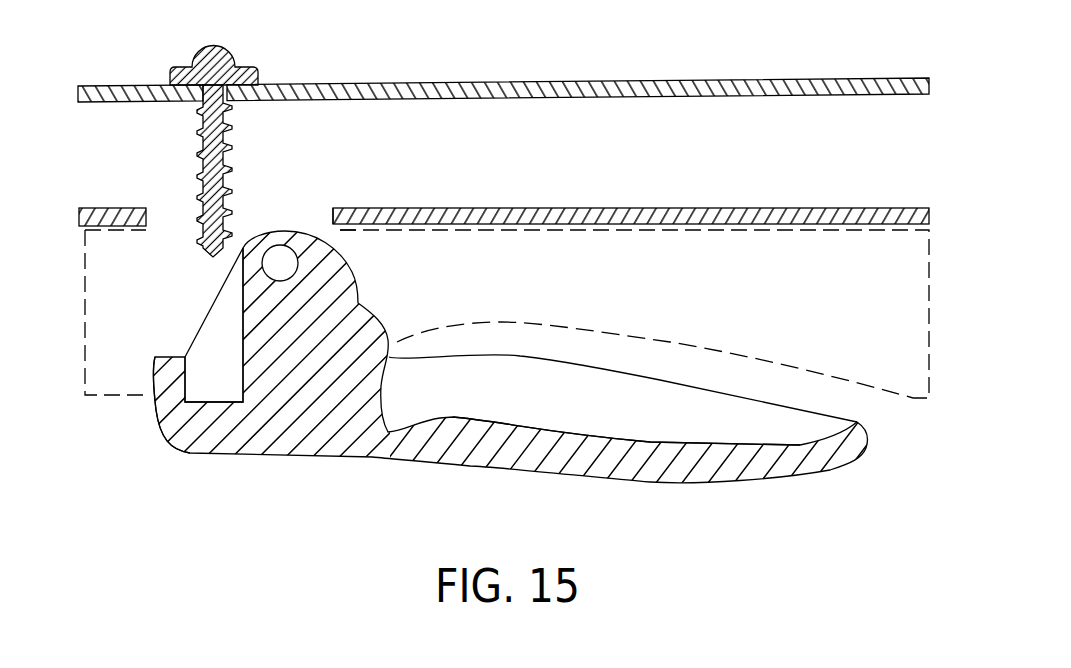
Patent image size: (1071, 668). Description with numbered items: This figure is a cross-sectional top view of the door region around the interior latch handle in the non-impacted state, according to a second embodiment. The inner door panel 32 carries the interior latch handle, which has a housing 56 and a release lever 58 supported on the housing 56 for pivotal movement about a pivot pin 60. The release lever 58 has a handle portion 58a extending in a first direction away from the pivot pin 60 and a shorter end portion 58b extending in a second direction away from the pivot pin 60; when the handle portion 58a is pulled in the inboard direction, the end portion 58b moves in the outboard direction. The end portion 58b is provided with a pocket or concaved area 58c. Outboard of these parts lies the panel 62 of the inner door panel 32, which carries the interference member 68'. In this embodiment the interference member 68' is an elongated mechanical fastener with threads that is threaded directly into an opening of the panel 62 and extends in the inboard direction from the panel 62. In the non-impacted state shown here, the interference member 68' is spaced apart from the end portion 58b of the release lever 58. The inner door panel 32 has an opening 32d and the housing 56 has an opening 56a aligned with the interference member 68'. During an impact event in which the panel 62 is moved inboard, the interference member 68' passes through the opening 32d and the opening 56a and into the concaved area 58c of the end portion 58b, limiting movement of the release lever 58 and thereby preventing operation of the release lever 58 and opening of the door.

The panel 62 is at (620, 88).
The interference member 68' is at (236, 151).
The housing 56 is at (107, 397).
The opening 56a is at (333, 227).
The inner door panel 32 is at (725, 208).
The opening 32d is at (332, 213).
The release lever 58 is at (459, 367).
The handle portion 58a is at (770, 462).
The end portion 58b is at (182, 433).
The concaved area 58c is at (222, 402).
The pivot pin 60 is at (277, 262).